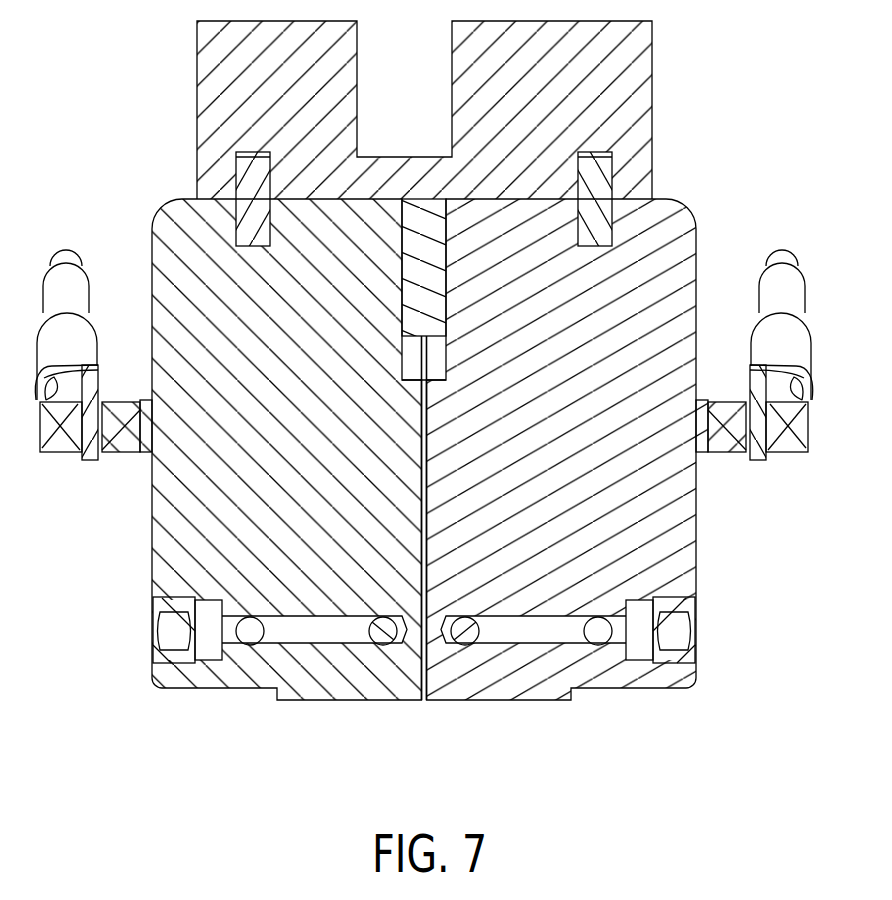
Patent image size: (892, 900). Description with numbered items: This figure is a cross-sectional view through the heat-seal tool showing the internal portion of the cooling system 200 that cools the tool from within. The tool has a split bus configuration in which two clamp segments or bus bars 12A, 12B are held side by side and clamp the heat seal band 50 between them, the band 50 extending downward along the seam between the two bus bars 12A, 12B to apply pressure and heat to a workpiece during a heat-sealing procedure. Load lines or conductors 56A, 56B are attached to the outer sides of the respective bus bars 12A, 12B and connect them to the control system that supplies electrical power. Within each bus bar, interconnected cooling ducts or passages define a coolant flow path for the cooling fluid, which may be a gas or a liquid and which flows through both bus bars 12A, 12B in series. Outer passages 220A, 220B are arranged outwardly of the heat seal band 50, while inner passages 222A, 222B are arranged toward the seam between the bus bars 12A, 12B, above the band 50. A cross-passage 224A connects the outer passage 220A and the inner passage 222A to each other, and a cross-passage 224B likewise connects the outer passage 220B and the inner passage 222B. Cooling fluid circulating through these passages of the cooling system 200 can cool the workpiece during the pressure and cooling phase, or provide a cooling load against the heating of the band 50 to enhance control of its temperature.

The cooling system 200 is at (136, 641).
The bus bar 12A is at (163, 246).
The bus bar 12B is at (682, 228).
The load line 56A is at (53, 289).
The load line 56B is at (795, 288).
The heat seal band 50 is at (423, 700).
The outer passage 220A is at (250, 633).
The outer passage 220B is at (597, 633).
The inner passage 222A is at (383, 635).
The inner passage 222B is at (467, 635).
The cross-passage 224A is at (308, 633).
The cross-passage 224B is at (540, 634).